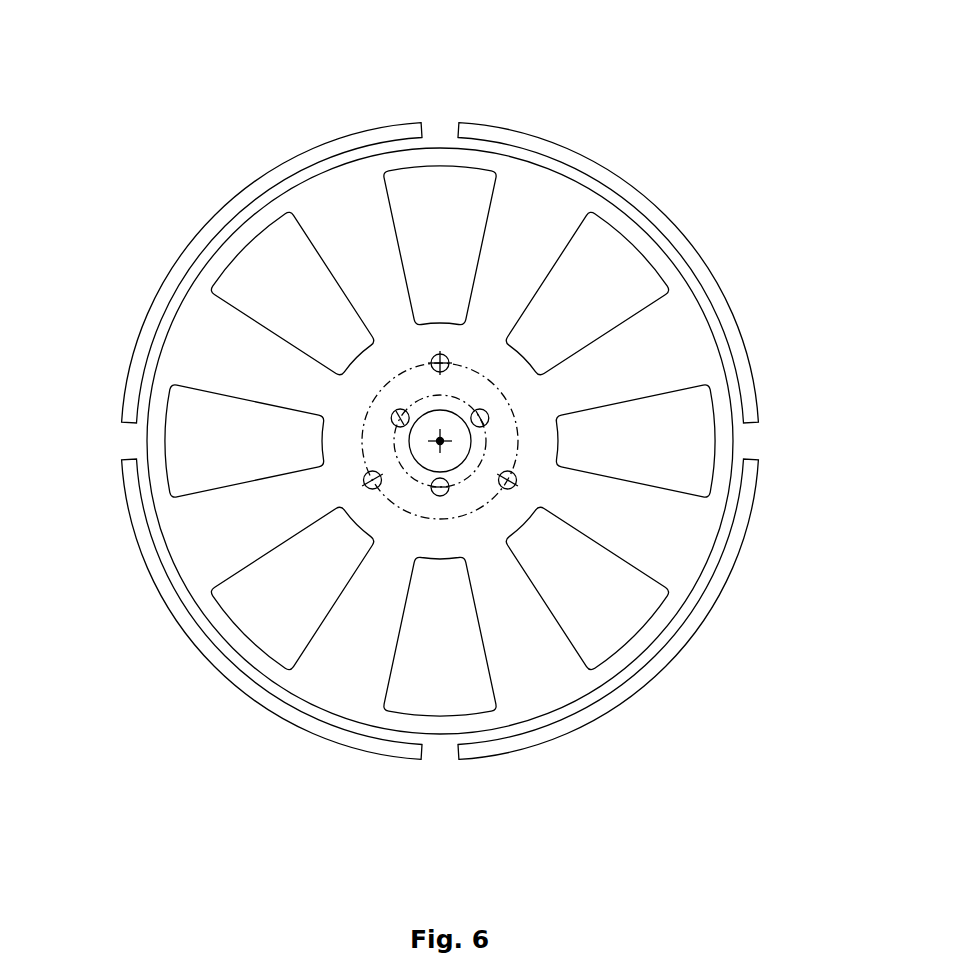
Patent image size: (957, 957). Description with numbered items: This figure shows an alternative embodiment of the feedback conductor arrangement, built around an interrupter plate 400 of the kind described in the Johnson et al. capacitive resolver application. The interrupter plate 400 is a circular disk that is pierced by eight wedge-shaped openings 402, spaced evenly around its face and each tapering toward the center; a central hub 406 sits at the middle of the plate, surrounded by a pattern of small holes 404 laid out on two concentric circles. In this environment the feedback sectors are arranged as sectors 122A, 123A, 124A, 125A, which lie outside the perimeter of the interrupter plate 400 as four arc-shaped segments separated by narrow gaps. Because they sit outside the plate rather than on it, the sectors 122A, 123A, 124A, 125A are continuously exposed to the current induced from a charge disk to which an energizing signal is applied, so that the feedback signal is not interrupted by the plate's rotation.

The interrupter plate 400 is at (760, 44).
The feedback sector 122A is at (308, 150).
The feedback sector 123A is at (130, 536).
The feedback sector 124A is at (505, 758).
The feedback sector 125A is at (730, 302).
The slot/opening 402 is at (440, 198).
The mounting hole 404 is at (490, 396).
The central hub 406 is at (432, 461).